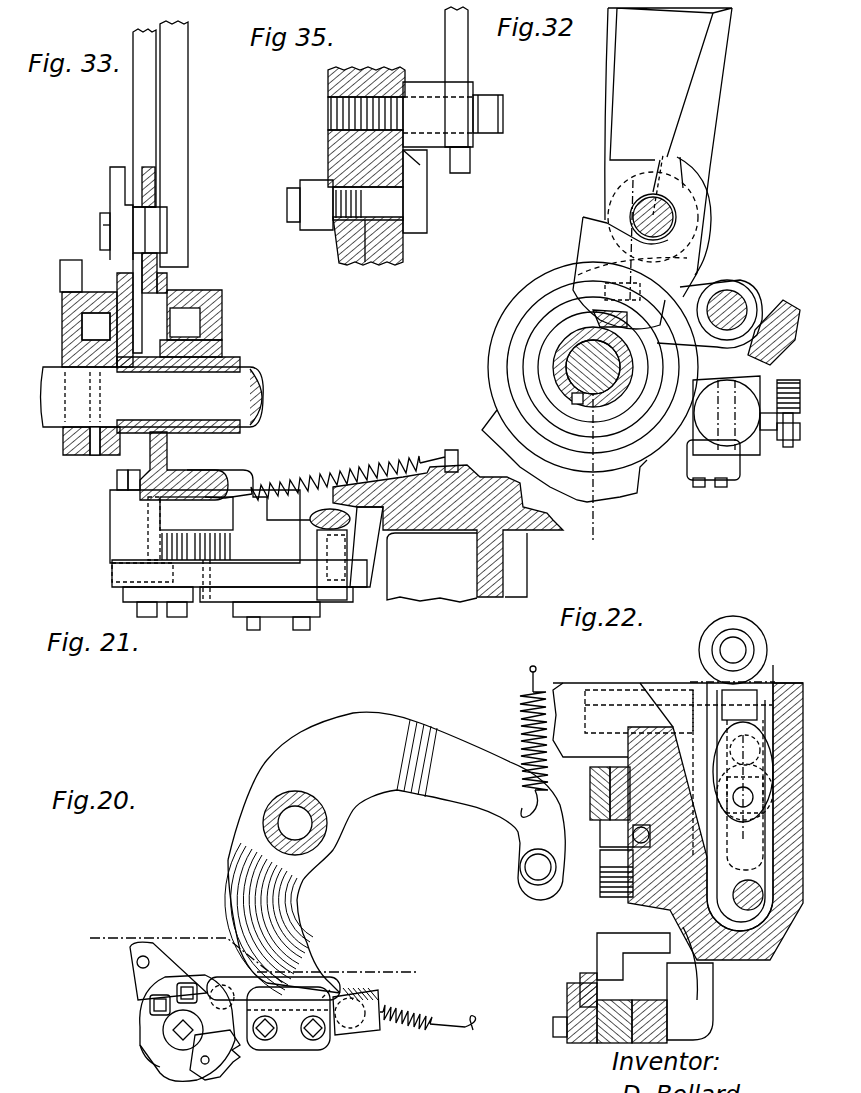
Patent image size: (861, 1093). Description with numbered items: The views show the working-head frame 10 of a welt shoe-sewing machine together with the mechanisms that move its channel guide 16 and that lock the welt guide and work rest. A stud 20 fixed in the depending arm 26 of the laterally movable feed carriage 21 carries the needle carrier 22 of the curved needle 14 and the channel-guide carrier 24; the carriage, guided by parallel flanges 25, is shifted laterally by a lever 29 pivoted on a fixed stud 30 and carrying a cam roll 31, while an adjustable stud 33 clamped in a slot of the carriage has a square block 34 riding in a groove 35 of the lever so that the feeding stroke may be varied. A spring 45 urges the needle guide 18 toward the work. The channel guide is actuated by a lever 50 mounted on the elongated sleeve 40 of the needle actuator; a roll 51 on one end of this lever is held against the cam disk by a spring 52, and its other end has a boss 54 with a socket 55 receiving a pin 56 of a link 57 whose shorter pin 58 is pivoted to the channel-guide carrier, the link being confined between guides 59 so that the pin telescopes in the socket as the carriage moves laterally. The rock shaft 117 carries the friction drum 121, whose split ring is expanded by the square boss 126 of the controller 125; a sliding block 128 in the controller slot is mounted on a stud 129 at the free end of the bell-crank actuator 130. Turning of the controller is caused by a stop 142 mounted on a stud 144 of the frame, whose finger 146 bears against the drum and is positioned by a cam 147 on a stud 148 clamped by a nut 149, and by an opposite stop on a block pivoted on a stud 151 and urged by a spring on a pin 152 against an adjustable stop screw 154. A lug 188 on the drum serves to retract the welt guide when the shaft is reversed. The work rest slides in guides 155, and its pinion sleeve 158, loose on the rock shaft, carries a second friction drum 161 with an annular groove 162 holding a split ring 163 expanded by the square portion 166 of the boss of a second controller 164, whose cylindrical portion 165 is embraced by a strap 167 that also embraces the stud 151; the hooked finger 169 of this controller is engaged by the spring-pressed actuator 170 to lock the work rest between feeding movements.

In FIG. 35, the frame 10 is at (405, 250).
In FIG. 21, the frame 10 is at (448, 533).
In FIG. 22, the frame 10 is at (570, 683).
In FIG. 20, the needle 14 is at (140, 1055).
In FIG. 21, the channel guide 16 is at (123, 597).
In FIG. 20, the channel guide 16 is at (160, 1078).
In FIG. 20, the needle guide 18 is at (215, 1068).
In FIG. 20, the stud 20 is at (165, 1022).
In FIG. 20, the feed carriage 21 is at (249, 965).
In FIG. 21, the needle carrier 22 is at (160, 543).
In FIG. 21, the channel-guide carrier 24 is at (112, 575).
In FIG. 20, the channel-guide carrier 24 is at (207, 990).
In FIG. 21, the parallel flanges 25 is at (148, 517).
In FIG. 22, the parallel flanges 25 is at (613, 690).
In FIG. 21, the depending arm 26 is at (168, 465).
In FIG. 22, the depending arm 26 is at (713, 1013).
In FIG. 22, the lever 29 is at (767, 652).
In FIG. 22, the fixed stud 30 is at (755, 907).
In FIG. 22, the roll 31 is at (728, 630).
In FIG. 32, the adjustable stud 33 is at (685, 135).
In FIG. 22, the adjustable stud 33 is at (723, 743).
In FIG. 22, the square block 34 is at (743, 781).
In FIG. 22, the groove 35 is at (742, 850).
In FIG. 20, the sleeve 40 is at (268, 803).
In FIG. 21, the spring 45 is at (345, 470).
In FIG. 20, the spring 45 is at (405, 1027).
In FIG. 20, the lever 50 is at (340, 815).
In FIG. 20, the roll 51 is at (518, 868).
In FIG. 20, the spring 52 is at (517, 727).
In FIG. 21, the boss 54 is at (367, 557).
In FIG. 21, the socket 55 is at (317, 530).
In FIG. 21, the pin 56 is at (340, 600).
In FIG. 20, the pin 56 is at (358, 1035).
In FIG. 21, the link 57 is at (330, 600).
In FIG. 20, the link 57 is at (330, 990).
In FIG. 22, the link 57 is at (585, 975).
In FIG. 21, the shorter pin 58 is at (210, 600).
In FIG. 20, the shorter pin 58 is at (273, 984).
In FIG. 21, the guides 59 is at (278, 633).
In FIG. 20, the guides 59 is at (287, 1040).
In FIG. 22, the guides 59 is at (577, 1043).
In FIG. 33, the rock shaft 117 is at (250, 400).
In FIG. 32, the rock shaft 117 is at (587, 400).
In FIG. 33, the friction drum 121 is at (63, 447).
In FIG. 33, the controller 125 is at (100, 230).
In FIG. 33, the square boss 126 is at (82, 322).
In FIG. 33, the sliding block 128 is at (110, 235).
In FIG. 33, the stud 129 is at (100, 235).
In FIG. 32, the stud 129 is at (640, 205).
In FIG. 33, the actuator 130 is at (188, 146).
In FIG. 32, the actuator 130 is at (713, 50).
In FIG. 35, the stop 142 is at (470, 165).
In FIG. 35, the stud 144 is at (365, 95).
In FIG. 35, the finger 146 is at (420, 165).
In FIG. 35, the cam 147 is at (427, 222).
In FIG. 35, the stud 148 is at (378, 212).
In FIG. 35, the clamping nut 149 is at (312, 205).
In FIG. 32, the stud 151 is at (740, 290).
In FIG. 32, the pin 152 is at (795, 310).
In FIG. 32, the adjustable stop screw 154 is at (705, 375).
In FIG. 32, the guides 155 is at (790, 447).
In FIG. 33, the sleeve 158 is at (240, 364).
In FIG. 32, the sleeve 158 is at (557, 357).
In FIG. 32, the friction drum 161 is at (515, 285).
In FIG. 32, the annular groove 162 is at (530, 387).
In FIG. 32, the split ring 163 is at (520, 327).
In FIG. 33, the controller 164 is at (110, 328).
In FIG. 32, the controller 164 is at (598, 243).
In FIG. 33, the cylindrical portion 165 is at (222, 350).
In FIG. 32, the cylindrical portion 165 is at (640, 292).
In FIG. 33, the square portion 166 is at (222, 316).
In FIG. 32, the square portion 166 is at (578, 275).
In FIG. 33, the strap 167 is at (167, 285).
In FIG. 33, the hooked finger 169 is at (155, 190).
In FIG. 32, the hooked finger 169 is at (690, 185).
In FIG. 33, the actuator 170 is at (143, 105).
In FIG. 35, the actuator 170 is at (456, 77).
In FIG. 32, the actuator 170 is at (680, 118).
In FIG. 33, the lug 188 is at (60, 268).